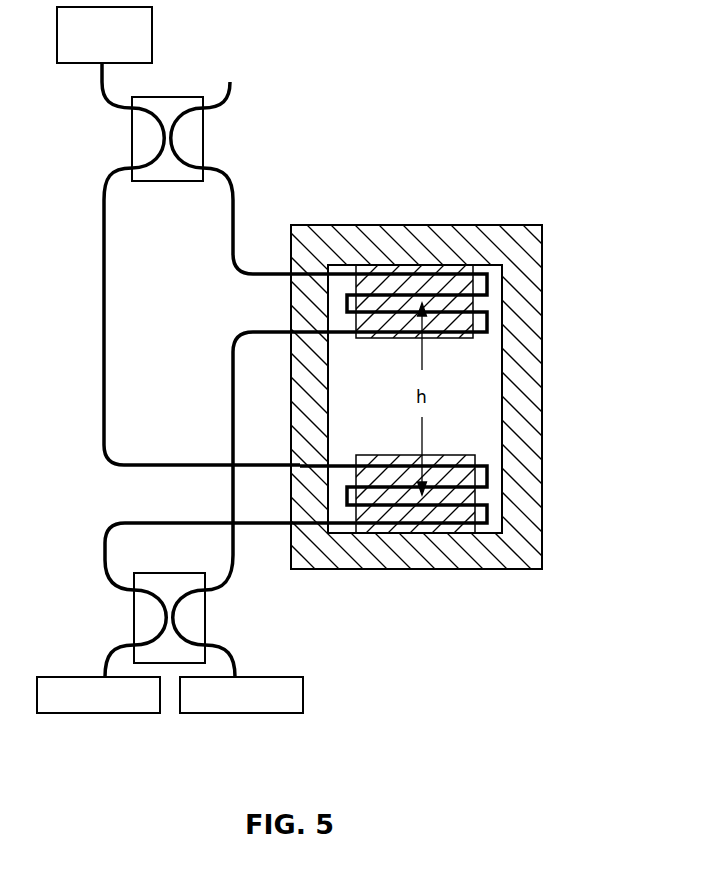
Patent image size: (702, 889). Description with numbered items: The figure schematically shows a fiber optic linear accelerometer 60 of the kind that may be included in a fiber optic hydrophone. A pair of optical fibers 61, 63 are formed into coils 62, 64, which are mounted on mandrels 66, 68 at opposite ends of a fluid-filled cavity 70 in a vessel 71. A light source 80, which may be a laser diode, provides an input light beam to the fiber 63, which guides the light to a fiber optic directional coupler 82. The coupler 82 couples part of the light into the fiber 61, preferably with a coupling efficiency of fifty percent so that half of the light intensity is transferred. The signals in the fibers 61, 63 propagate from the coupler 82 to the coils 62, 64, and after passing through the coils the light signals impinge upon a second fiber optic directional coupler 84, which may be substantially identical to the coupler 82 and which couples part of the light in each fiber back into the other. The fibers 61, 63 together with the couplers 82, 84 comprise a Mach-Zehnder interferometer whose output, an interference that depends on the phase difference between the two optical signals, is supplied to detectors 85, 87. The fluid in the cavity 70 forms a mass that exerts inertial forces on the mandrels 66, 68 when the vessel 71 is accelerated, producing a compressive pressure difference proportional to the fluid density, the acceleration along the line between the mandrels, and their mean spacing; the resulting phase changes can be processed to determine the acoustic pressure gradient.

The fiber optic linear accelerometer 60 is at (390, 681).
The optical fiber 61 is at (235, 220).
The coil 62 is at (507, 293).
The optical fiber 63 is at (104, 255).
The coil 64 is at (336, 474).
The mandrel 66 is at (413, 265).
The mandrel 68 is at (413, 533).
The fluid-filled cavity 70 is at (502, 384).
The vessel 71 is at (542, 484).
The light source 80 is at (152, 52).
The fiber optic directional coupler 82 is at (227, 130).
The second fiber optic directional coupler 84 is at (231, 618).
The detector 85 is at (85, 713).
The detector 87 is at (212, 713).